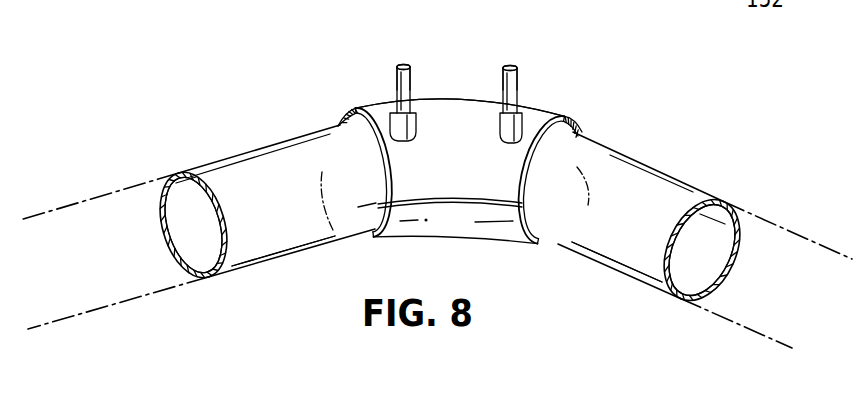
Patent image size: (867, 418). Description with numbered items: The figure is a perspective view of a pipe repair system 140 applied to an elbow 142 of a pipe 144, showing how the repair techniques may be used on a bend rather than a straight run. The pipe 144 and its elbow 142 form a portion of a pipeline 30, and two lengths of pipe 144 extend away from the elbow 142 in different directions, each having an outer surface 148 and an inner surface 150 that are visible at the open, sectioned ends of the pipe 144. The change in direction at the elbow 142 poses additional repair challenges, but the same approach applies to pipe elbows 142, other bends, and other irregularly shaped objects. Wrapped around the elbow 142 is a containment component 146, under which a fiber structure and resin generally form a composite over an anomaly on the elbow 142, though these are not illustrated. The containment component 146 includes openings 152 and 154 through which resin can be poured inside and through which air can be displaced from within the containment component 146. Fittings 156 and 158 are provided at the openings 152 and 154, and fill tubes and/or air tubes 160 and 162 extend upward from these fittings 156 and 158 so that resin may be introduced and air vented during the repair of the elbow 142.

The pipeline 30 is at (140, 300).
The elbow connector assembly 140 is at (128, 125).
The elbow 142 is at (350, 153).
The pipe 144 is at (248, 173).
The containment component 146 is at (447, 135).
The outer surface 148 is at (258, 227).
The inner surface 150 is at (181, 212).
The opening 152 is at (415, 137).
The opening 154 is at (500, 140).
The fitting 156 is at (350, 118).
The fitting 158 is at (558, 108).
The fill tube and/or air tube 160 is at (400, 88).
The fill tube and/or air tube 162 is at (519, 88).